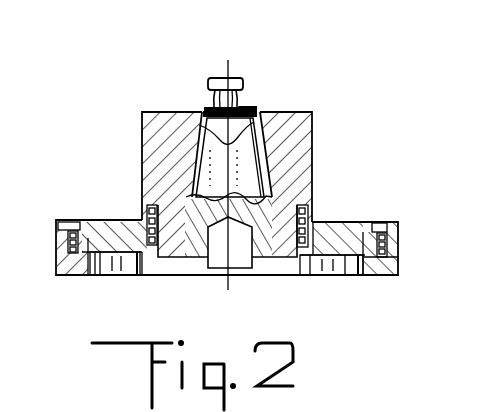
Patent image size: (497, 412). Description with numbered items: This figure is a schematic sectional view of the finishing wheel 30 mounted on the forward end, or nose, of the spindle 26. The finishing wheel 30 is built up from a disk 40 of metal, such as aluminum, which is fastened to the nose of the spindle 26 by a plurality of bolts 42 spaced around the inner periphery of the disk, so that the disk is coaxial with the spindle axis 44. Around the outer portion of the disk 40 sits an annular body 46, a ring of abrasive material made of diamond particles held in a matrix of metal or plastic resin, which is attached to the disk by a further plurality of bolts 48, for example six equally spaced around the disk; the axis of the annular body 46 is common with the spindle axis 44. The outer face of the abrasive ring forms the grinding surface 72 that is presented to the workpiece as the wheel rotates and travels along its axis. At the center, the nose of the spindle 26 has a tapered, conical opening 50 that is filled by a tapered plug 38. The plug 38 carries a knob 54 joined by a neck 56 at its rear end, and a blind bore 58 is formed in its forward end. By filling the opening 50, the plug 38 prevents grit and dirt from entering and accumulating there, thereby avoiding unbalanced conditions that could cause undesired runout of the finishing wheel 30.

The spindle 26 is at (320, 140).
The finishing wheel 30 is at (355, 214).
The tapered plug 38 is at (194, 126).
The disk 40 is at (342, 278).
The bolts 42 is at (154, 280).
The spindle axis 44 is at (202, 110).
The annular body of abrasive material 46 is at (398, 260).
The bolts 48 is at (383, 222).
The tapered opening 50 is at (262, 112).
The knob 54 is at (218, 77).
The neck 56 is at (252, 107).
The blind bore 58 is at (215, 273).
The grinding surface 72 is at (386, 278).